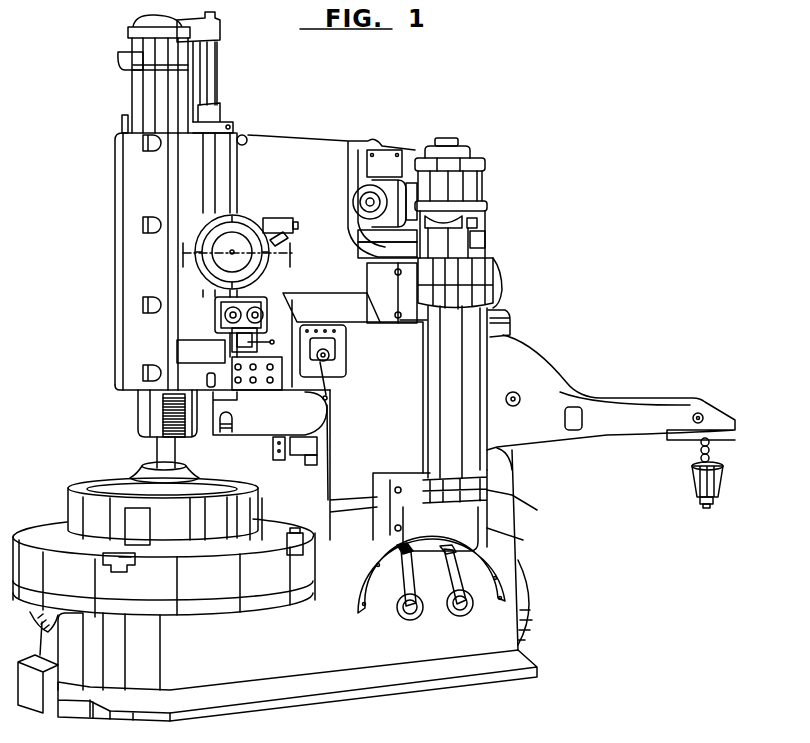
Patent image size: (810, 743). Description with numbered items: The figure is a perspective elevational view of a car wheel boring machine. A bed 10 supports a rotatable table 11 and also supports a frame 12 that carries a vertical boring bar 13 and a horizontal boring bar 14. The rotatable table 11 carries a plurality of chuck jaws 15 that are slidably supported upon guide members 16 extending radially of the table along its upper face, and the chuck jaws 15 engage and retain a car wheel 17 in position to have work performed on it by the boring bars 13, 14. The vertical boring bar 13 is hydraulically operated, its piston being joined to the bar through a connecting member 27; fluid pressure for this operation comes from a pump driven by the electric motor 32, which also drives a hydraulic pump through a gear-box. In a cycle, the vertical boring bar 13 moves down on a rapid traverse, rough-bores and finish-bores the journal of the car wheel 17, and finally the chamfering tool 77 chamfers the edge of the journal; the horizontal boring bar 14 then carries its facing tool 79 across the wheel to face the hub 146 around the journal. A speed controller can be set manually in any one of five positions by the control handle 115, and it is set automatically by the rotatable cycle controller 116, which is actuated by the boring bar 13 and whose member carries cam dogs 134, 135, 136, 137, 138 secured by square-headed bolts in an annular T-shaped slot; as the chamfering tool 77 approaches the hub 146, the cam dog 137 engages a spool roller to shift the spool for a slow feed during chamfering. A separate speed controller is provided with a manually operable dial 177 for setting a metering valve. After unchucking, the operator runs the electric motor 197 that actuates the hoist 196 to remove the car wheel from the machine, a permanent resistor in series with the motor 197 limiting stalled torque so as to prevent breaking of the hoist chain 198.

The bed 10 is at (312, 641).
The rotatable table 11 is at (208, 584).
The frame 12 is at (382, 406).
The vertical boring bar 13 is at (143, 78).
The horizontal boring bar 14 is at (300, 452).
The chuck jaws 15 is at (72, 505).
The guide members 16 is at (113, 554).
The car wheel 17 is at (88, 492).
The connecting member 27 is at (218, 40).
The electric motor 32 is at (405, 174).
The chamfering tool 77 is at (178, 441).
The facing tool 79 is at (277, 465).
The control handle 115 is at (248, 305).
The rotatable cycle controller 116 is at (238, 242).
The cam dog 134 is at (216, 228).
The cam dog 135 is at (212, 266).
The cam dog 136 is at (214, 292).
The cam dog 137 is at (291, 256).
The cam dog 138 is at (279, 240).
The hub 146 is at (137, 472).
The manually operable dial 177 is at (333, 360).
The hoist 196 is at (556, 384).
The electric motor 197 is at (470, 190).
The hoist chain 198 is at (714, 450).